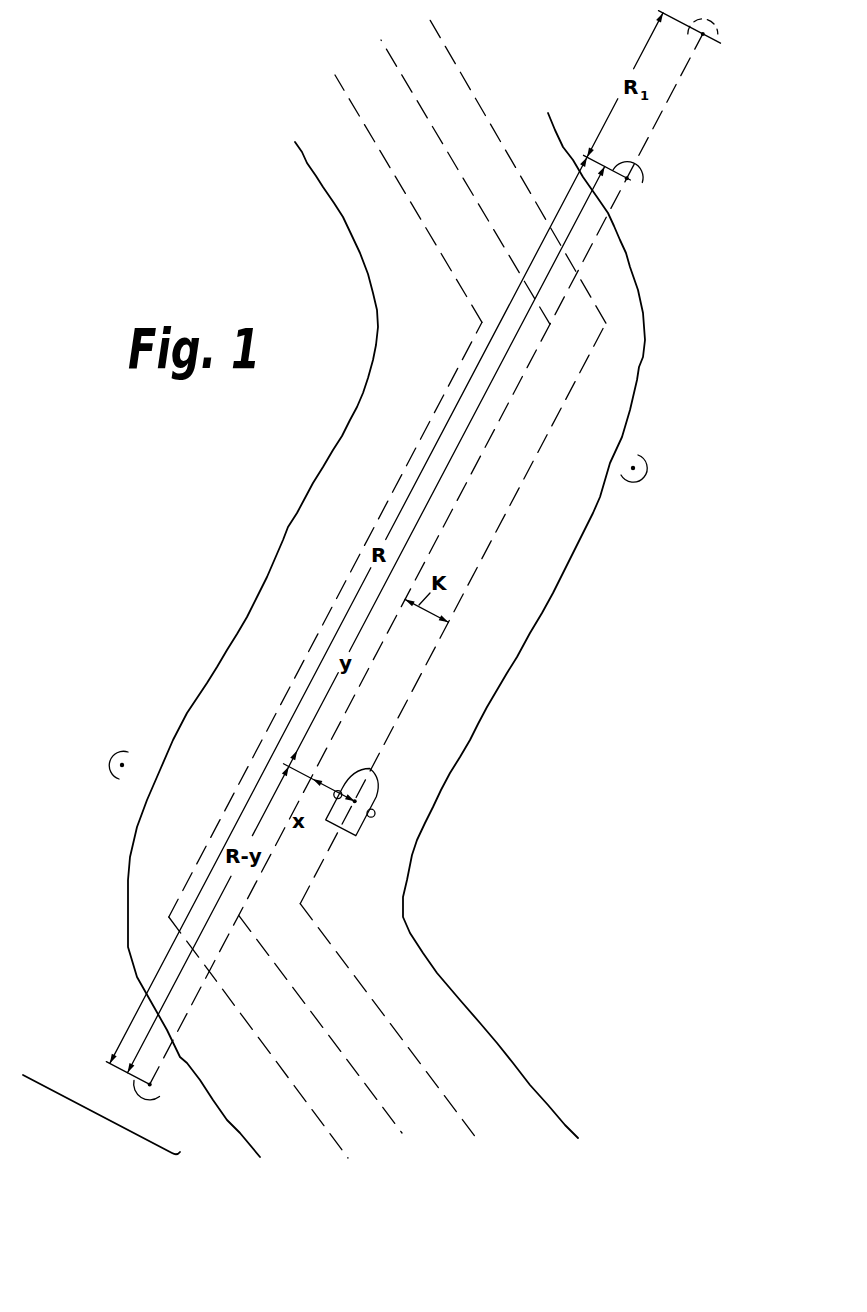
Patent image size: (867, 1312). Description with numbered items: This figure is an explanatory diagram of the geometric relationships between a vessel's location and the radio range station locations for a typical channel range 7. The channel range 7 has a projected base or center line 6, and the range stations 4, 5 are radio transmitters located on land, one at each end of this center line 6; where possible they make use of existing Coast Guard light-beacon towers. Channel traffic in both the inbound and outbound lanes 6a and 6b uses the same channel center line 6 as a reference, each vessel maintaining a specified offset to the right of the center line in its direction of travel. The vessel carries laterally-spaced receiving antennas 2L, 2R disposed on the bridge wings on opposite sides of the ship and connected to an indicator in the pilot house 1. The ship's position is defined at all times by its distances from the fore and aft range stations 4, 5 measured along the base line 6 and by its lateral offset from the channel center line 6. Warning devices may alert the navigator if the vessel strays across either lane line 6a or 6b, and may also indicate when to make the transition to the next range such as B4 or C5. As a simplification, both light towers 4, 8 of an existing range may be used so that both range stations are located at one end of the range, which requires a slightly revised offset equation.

The pilot house 1 is at (359, 801).
The receiving antenna 2L is at (340, 790).
The receiving antenna 2R is at (372, 818).
The range station 4 is at (642, 180).
The range station 5 is at (160, 1096).
The channel center line 6 is at (505, 411).
The lane 6a is at (455, 374).
The lane 6b is at (537, 453).
The channel range 7 is at (96, 1118).
The light tower 8 is at (719, 34).
The range C5 is at (645, 478).
The range B4 is at (120, 751).